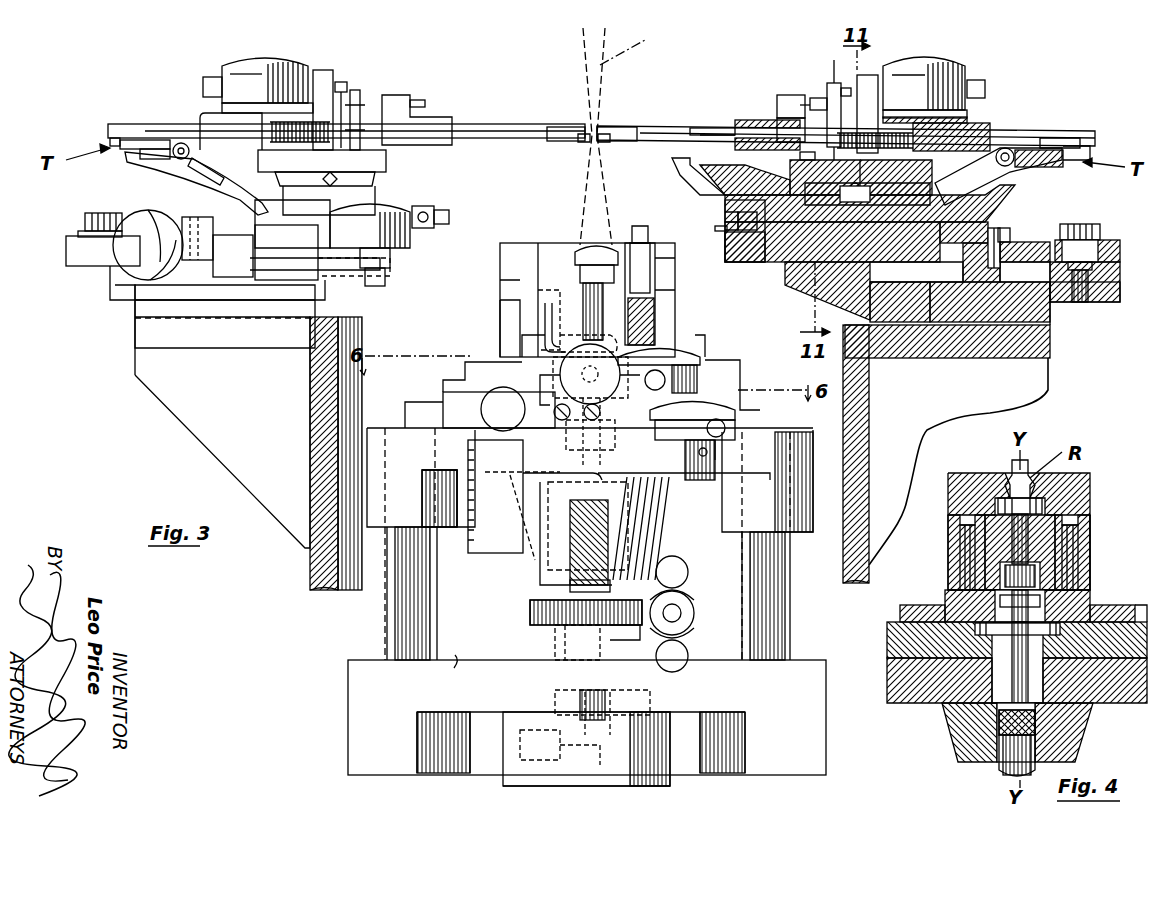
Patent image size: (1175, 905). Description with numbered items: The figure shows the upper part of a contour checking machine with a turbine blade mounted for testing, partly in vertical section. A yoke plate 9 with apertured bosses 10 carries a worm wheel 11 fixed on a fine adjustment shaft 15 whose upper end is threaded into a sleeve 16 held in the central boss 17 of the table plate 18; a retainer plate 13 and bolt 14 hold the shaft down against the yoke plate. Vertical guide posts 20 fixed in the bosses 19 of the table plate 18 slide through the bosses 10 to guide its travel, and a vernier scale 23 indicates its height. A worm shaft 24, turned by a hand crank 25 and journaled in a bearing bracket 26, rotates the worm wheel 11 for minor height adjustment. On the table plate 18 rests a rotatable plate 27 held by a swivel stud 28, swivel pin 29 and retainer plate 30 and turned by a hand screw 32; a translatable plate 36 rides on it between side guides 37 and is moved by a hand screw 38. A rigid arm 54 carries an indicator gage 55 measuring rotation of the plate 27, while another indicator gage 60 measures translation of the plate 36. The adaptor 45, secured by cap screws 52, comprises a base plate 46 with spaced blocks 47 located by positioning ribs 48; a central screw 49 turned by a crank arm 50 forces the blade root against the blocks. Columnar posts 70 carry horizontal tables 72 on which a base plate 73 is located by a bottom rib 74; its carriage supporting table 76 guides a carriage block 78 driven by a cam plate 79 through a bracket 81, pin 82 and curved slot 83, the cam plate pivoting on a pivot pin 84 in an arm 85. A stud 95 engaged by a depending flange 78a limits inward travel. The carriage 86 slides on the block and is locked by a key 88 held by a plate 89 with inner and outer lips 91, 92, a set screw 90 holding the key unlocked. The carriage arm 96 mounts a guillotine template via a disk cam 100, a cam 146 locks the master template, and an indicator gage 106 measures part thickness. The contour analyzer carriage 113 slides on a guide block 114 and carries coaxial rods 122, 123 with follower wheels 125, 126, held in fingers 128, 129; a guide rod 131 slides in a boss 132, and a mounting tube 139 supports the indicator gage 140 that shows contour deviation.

In FIG. 3, the yoke plate 9 is at (450, 647).
In FIG. 3, the apertured bosses 10 is at (348, 690).
In FIG. 3, the worm wheel 11 is at (530, 630).
In FIG. 3, the retainer plate 13 is at (520, 765).
In FIG. 3, the bolt 14 is at (568, 786).
In FIG. 3, the fine adjustment shaft 15 is at (570, 585).
In FIG. 4, the fine adjustment shaft 15 is at (999, 738).
In FIG. 3, the sleeve 16 is at (620, 508).
In FIG. 4, the sleeve 16 is at (999, 760).
In FIG. 3, the central boss 17 is at (640, 532).
In FIG. 4, the central boss 17 is at (1070, 735).
In FIG. 3, the table plate 18 is at (448, 448).
In FIG. 4, the table plate 18 is at (1120, 697).
In FIG. 3, the apertured bosses 19 is at (372, 527).
In FIG. 3, the vertical guide posts 20 is at (387, 625).
In FIG. 3, the vernier scale 23 is at (480, 565).
In FIG. 3, the worm shaft 24 is at (680, 610).
In FIG. 3, the hand crank 25 is at (684, 668).
In FIG. 3, the bearing bracket 26 is at (690, 580).
In FIG. 3, the rotatable plate 27 is at (420, 410).
In FIG. 4, the rotatable plate 27 is at (1140, 606).
In FIG. 4, the swivel stud 28 is at (1069, 680).
In FIG. 4, the swivel pin 29 is at (939, 680).
In FIG. 4, the retainer plate 30 is at (1017, 666).
In FIG. 3, the hand screw 32 is at (482, 401).
In FIG. 3, the translatable plate 36 is at (520, 357).
In FIG. 4, the translatable plate 36 is at (945, 598).
In FIG. 3, the side guides 37 is at (478, 372).
In FIG. 4, the side guides 37 is at (910, 606).
In FIG. 3, the hand screw 38 is at (560, 377).
In FIG. 3, the adaptor 45 is at (540, 240).
In FIG. 4, the adaptor 45 is at (1098, 523).
In FIG. 3, the base plate 46 is at (500, 296).
In FIG. 4, the base plate 46 is at (1090, 540).
In FIG. 3, the spaced blocks 47 is at (500, 262).
In FIG. 4, the spaced blocks 47 is at (948, 500).
In FIG. 3, the positioning rib 48 is at (538, 290).
In FIG. 4, the positioning rib 48 is at (948, 510).
In FIG. 3, the central screw 49 is at (545, 318).
In FIG. 4, the central screw 49 is at (1012, 470).
In FIG. 3, the crank arm 50 is at (560, 344).
In FIG. 4, the crank arm 50 is at (1040, 575).
In FIG. 3, the countersunk cap screws 52 is at (580, 275).
In FIG. 4, the countersunk cap screws 52 is at (960, 545).
In FIG. 3, the rigid arm 54 is at (688, 470).
In FIG. 3, the indicator gage 55 is at (735, 411).
In FIG. 3, the indicator gage 60 is at (680, 362).
In FIG. 3, the columnar posts 70 is at (310, 578).
In FIG. 3, the horizontal tables 72 is at (220, 340).
In FIG. 3, the base plate 73 is at (140, 302).
In FIG. 3, the bottom rib 74 is at (248, 318).
In FIG. 3, the carriage supporting table 76 is at (805, 283).
In FIG. 3, the carriage block 78 is at (395, 258).
In FIG. 3, the depending flange 78a is at (990, 305).
In FIG. 3, the cam plate 79 is at (70, 245).
In FIG. 3, the bracket 81 is at (1012, 242).
In FIG. 3, the pin 82 is at (1010, 240).
In FIG. 3, the curved slot 83 is at (1006, 275).
In FIG. 3, the pivot pin 84 is at (85, 222).
In FIG. 3, the arm 85 is at (1120, 270).
In FIG. 3, the carriage 86 is at (205, 182).
In FIG. 3, the locking key 88 is at (725, 246).
In FIG. 3, the plate 89 is at (725, 208).
In FIG. 3, the set screw 90 is at (715, 228).
In FIG. 3, the inner lip 91 is at (856, 199).
In FIG. 3, the outer lip 92 is at (725, 216).
In FIG. 3, the stud 95 is at (900, 302).
In FIG. 3, the arm 96 is at (690, 175).
In FIG. 3, the disk cam 100 is at (722, 130).
In FIG. 3, the indicator gage 106 is at (365, 222).
In FIG. 3, the transversely slidable carriage 113 is at (200, 115).
In FIG. 3, the guide block 114 is at (303, 185).
In FIG. 3, the inner rod 122 is at (515, 127).
In FIG. 3, the outer rod 123 is at (130, 124).
In FIG. 3, the follower wheel 125 is at (586, 142).
In FIG. 3, the follower wheel 126 is at (110, 140).
In FIG. 3, the finger 128 is at (355, 90).
In FIG. 3, the finger 129 is at (330, 72).
In FIG. 3, the guide rod 131 is at (778, 105).
In FIG. 3, the boss 132 is at (410, 96).
In FIG. 3, the mounting tube 139 is at (985, 90).
In FIG. 3, the indicator gage 140 is at (250, 58).
In FIG. 3, the circular cam 146 is at (1020, 148).